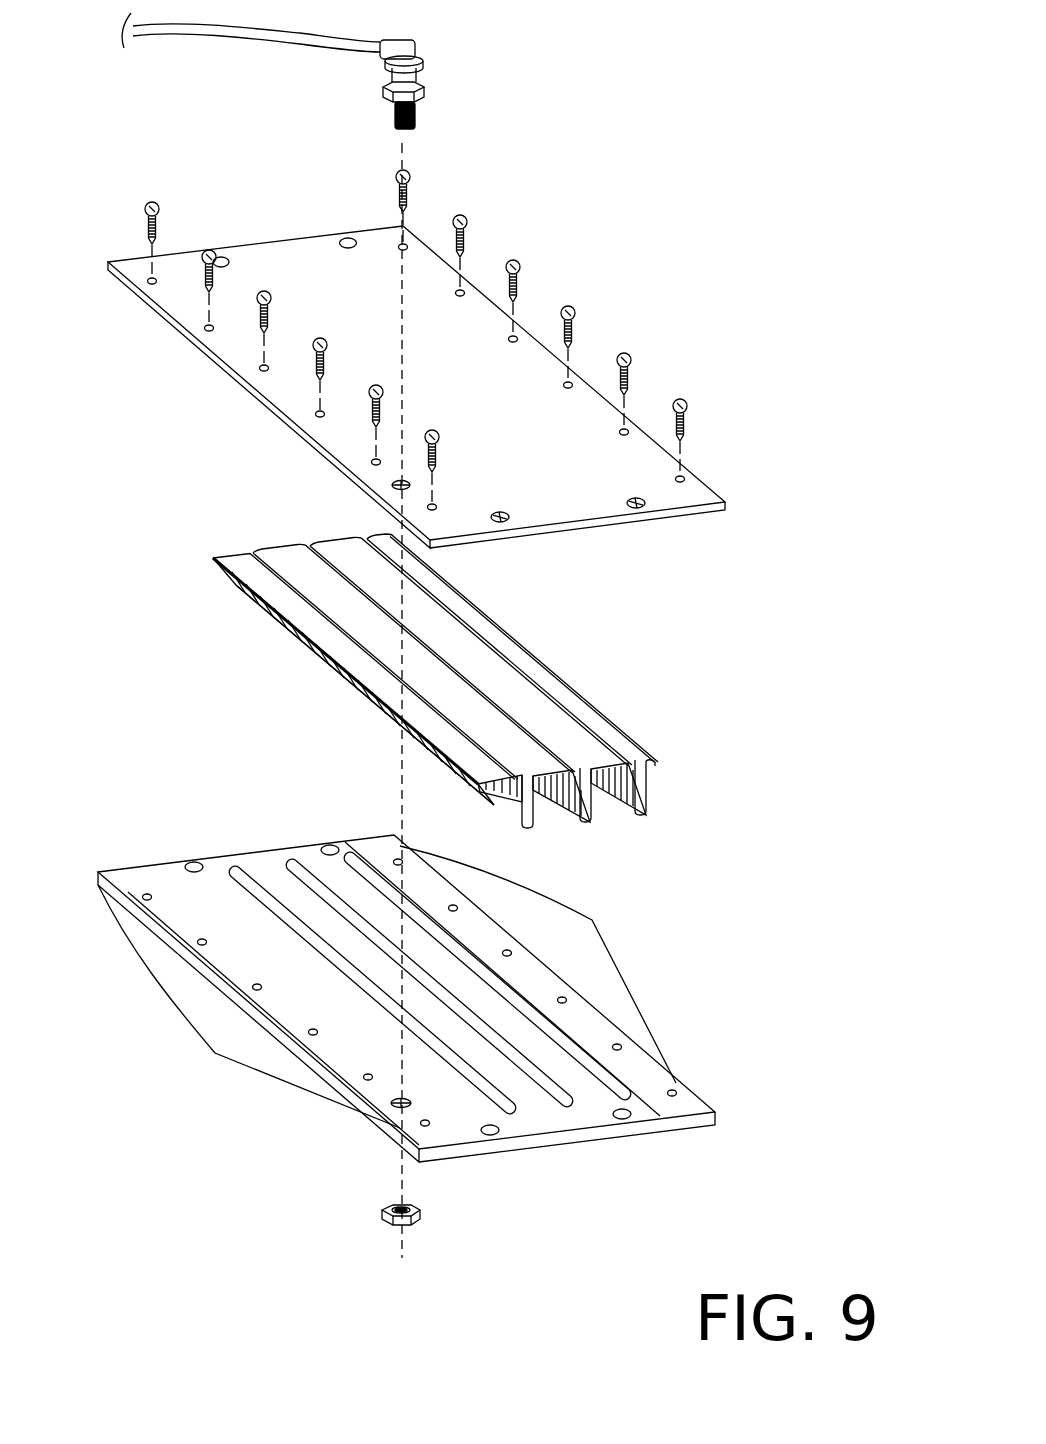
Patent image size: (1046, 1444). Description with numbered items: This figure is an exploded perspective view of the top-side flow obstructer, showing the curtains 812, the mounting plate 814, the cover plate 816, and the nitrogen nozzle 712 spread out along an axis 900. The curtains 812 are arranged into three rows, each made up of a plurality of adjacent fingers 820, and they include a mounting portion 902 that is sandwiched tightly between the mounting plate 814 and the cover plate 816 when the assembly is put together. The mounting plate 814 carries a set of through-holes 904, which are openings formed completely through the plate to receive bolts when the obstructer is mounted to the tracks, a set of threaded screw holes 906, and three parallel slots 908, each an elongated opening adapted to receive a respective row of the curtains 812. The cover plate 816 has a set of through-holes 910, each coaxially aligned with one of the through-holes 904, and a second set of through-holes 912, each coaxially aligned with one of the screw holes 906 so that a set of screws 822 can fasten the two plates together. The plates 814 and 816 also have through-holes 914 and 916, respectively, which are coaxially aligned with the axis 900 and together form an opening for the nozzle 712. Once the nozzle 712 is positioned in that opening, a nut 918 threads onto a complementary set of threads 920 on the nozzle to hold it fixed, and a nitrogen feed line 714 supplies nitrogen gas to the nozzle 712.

The nitrogen nozzle 712 is at (328, 65).
The nitrogen feed line 714 is at (320, 52).
The threads 920 is at (418, 118).
The cover plate 816 is at (415, 359).
The screws 822 is at (160, 209).
The through-holes 910 is at (341, 247).
The second set of through-holes 912 is at (205, 328).
The through-hole 916 is at (392, 485).
The axis 900 is at (404, 357).
The curtains 812 is at (459, 708).
The mounting portion 902 is at (459, 708).
The fingers 820 is at (262, 616).
The mounting plate 814 is at (424, 995).
The through-holes 904 is at (320, 848).
The threaded screw holes 906 is at (387, 987).
The slots 908 is at (462, 1070).
The through-hole 914 is at (398, 1098).
The nut 918 is at (420, 1213).